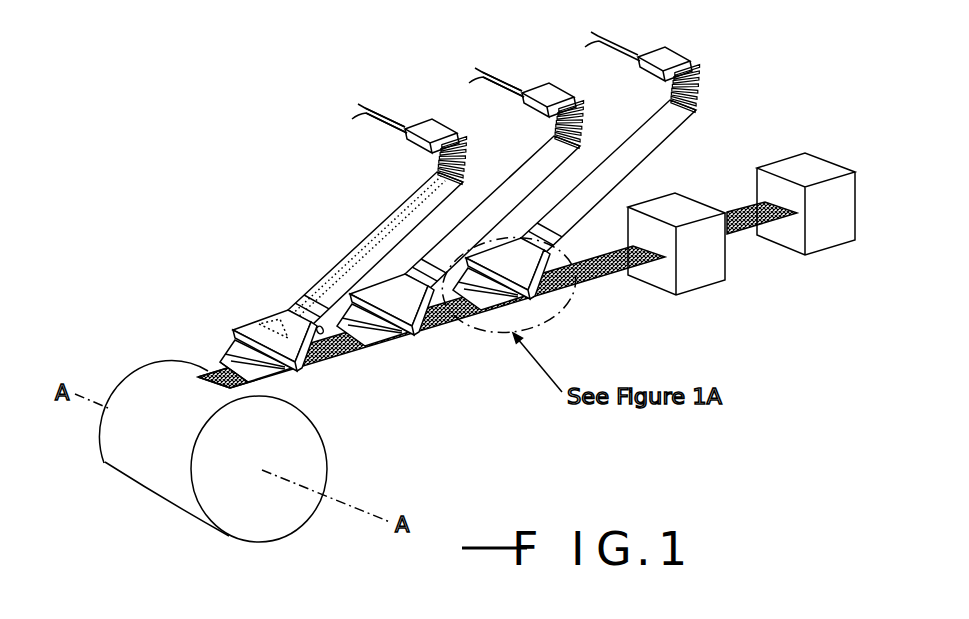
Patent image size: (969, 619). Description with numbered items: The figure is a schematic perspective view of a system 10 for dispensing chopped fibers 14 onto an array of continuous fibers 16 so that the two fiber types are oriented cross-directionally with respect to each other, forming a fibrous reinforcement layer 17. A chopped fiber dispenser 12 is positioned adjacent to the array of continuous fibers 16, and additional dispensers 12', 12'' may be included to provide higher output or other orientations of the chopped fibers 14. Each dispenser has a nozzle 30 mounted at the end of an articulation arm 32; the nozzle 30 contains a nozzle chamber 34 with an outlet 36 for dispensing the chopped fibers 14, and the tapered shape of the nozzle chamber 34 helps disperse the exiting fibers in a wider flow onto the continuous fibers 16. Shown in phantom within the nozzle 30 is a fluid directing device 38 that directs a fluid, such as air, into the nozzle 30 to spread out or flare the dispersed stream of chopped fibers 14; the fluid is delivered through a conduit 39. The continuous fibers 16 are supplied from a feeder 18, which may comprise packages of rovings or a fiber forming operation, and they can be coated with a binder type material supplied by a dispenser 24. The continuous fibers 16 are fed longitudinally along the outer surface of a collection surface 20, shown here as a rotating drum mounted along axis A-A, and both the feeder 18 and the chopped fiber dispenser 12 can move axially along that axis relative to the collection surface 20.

The system 10 is at (128, 319).
The chopped fiber dispenser 12 is at (576, 171).
The additional dispenser 12' is at (458, 207).
The additional dispenser 12'' is at (325, 283).
The chopped fibers 14 is at (213, 368).
The continuous fibers 16 is at (352, 355).
The fibrous reinforcement layer 17 is at (207, 377).
The feeder 18 is at (805, 165).
The collection surface 20 is at (102, 457).
The dispenser 24 is at (677, 207).
The nozzle 30 is at (233, 339).
The articulation arm 32 is at (302, 308).
The nozzle chamber 34 is at (322, 356).
The outlet 36 is at (267, 382).
The fluid directing device 38 is at (280, 318).
The conduit 39 is at (480, 73).